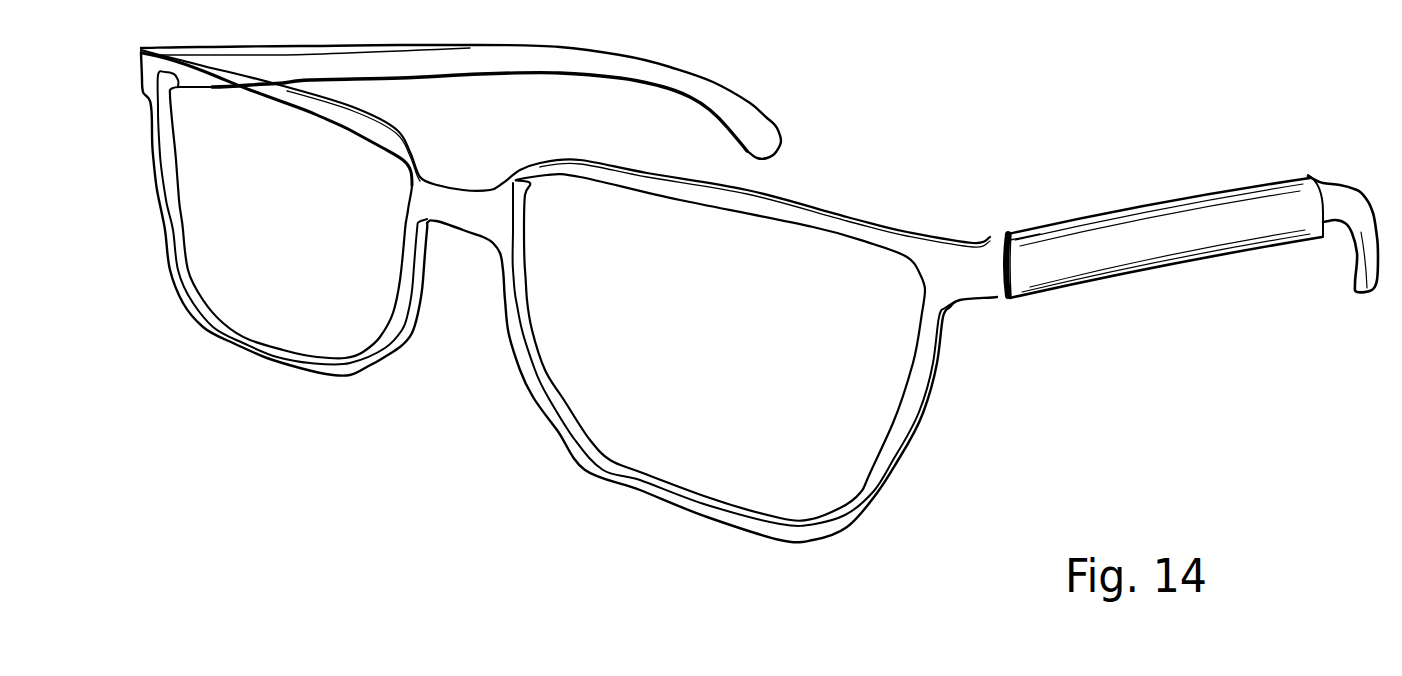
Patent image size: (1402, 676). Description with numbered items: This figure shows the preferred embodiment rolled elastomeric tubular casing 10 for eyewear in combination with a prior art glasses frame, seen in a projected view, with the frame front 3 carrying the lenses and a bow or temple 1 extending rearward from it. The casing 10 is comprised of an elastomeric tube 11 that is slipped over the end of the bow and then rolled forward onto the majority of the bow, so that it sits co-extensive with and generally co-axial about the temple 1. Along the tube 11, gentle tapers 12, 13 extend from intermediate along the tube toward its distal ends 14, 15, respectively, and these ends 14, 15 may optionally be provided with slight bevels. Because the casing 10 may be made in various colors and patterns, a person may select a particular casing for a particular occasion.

The temple 1 is at (1336, 203).
The frame front 3 is at (846, 217).
The elastomeric tubular casing 10 is at (1184, 214).
The elastomeric tube 11 is at (1174, 246).
The gentle taper 12 is at (1292, 242).
The gentle taper 13 is at (1040, 224).
The distal end 14 is at (1311, 181).
The distal end 15 is at (999, 294).